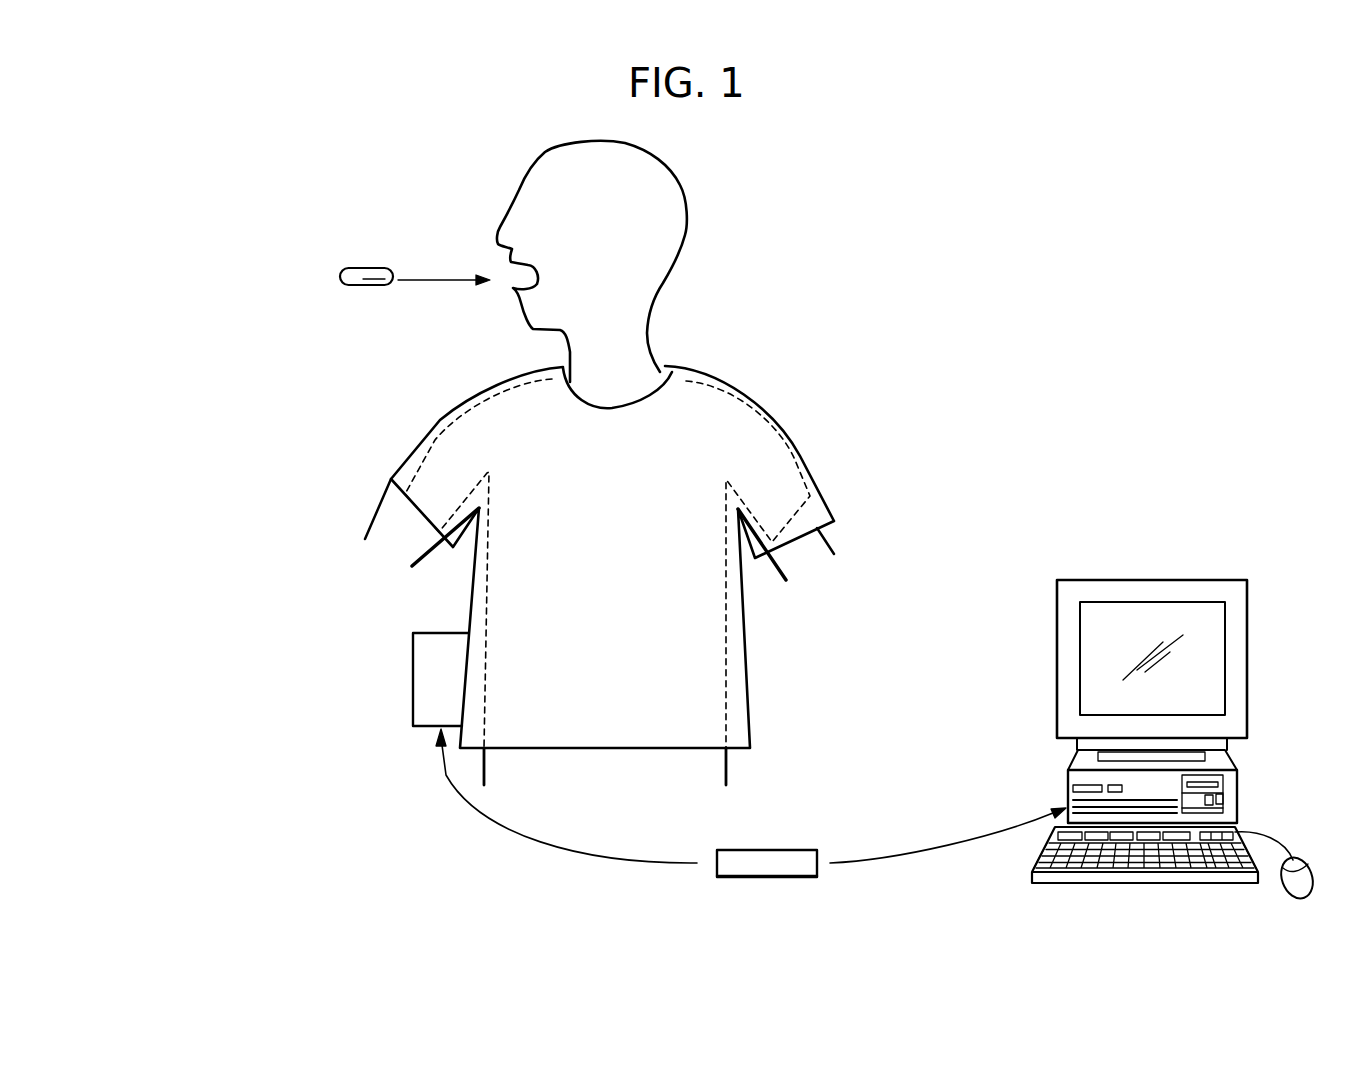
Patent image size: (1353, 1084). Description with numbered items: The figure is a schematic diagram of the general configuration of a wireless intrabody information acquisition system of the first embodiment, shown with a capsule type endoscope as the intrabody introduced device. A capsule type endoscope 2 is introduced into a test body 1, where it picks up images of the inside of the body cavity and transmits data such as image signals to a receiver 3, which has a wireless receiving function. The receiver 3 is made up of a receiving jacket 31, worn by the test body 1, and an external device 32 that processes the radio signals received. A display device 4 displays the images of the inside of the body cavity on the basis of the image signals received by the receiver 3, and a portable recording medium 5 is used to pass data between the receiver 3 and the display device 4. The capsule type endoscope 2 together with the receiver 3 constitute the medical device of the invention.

The test body 1 is at (682, 190).
The capsule type endoscope 2 is at (360, 288).
The receiver 3 is at (457, 575).
The receiving jacket 31 is at (470, 625).
The external device 32 is at (342, 679).
The display device 4 is at (1100, 580).
The portable recording medium 5 is at (757, 877).